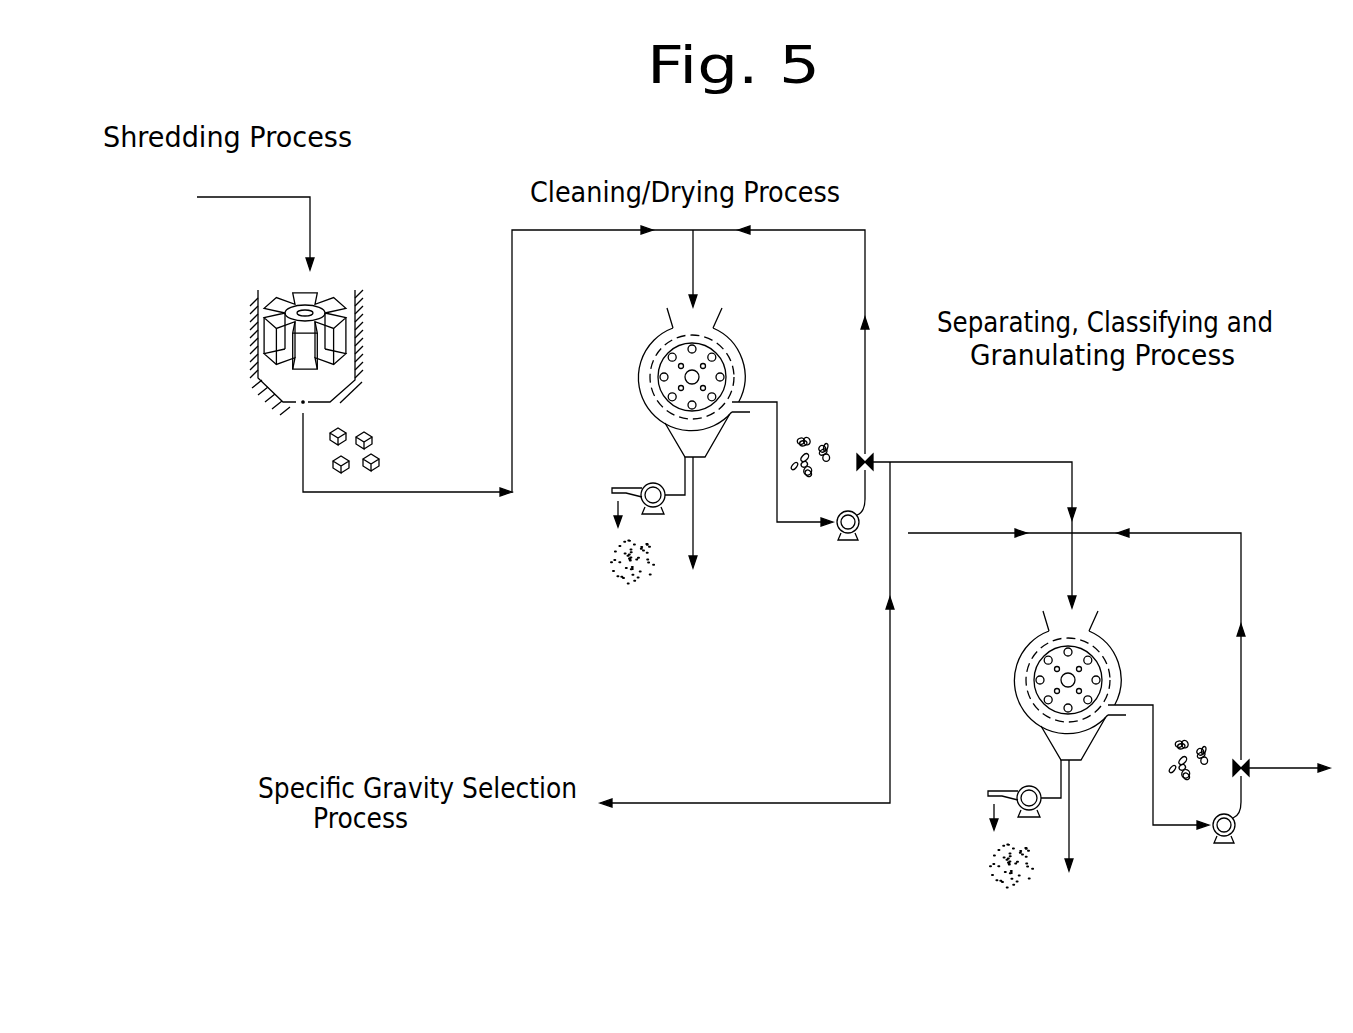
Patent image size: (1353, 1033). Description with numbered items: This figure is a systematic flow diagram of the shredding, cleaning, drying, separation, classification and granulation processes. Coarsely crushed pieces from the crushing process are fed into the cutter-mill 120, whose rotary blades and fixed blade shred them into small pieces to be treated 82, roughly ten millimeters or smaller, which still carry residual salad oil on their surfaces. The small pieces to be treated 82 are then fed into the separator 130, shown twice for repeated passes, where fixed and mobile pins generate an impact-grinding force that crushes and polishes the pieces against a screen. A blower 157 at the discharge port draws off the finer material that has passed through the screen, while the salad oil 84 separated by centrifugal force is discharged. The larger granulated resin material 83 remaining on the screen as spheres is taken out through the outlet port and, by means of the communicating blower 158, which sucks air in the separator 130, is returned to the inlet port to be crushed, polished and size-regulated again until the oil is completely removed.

The cutter-mill 120 is at (328, 280).
The small pieces to be treated 82 is at (367, 440).
The separator 130 is at (736, 327).
The blower 157 is at (648, 486).
The salad oil 84 is at (607, 570).
The granulated resin material 83 is at (815, 418).
The communicating blower 158 is at (848, 545).